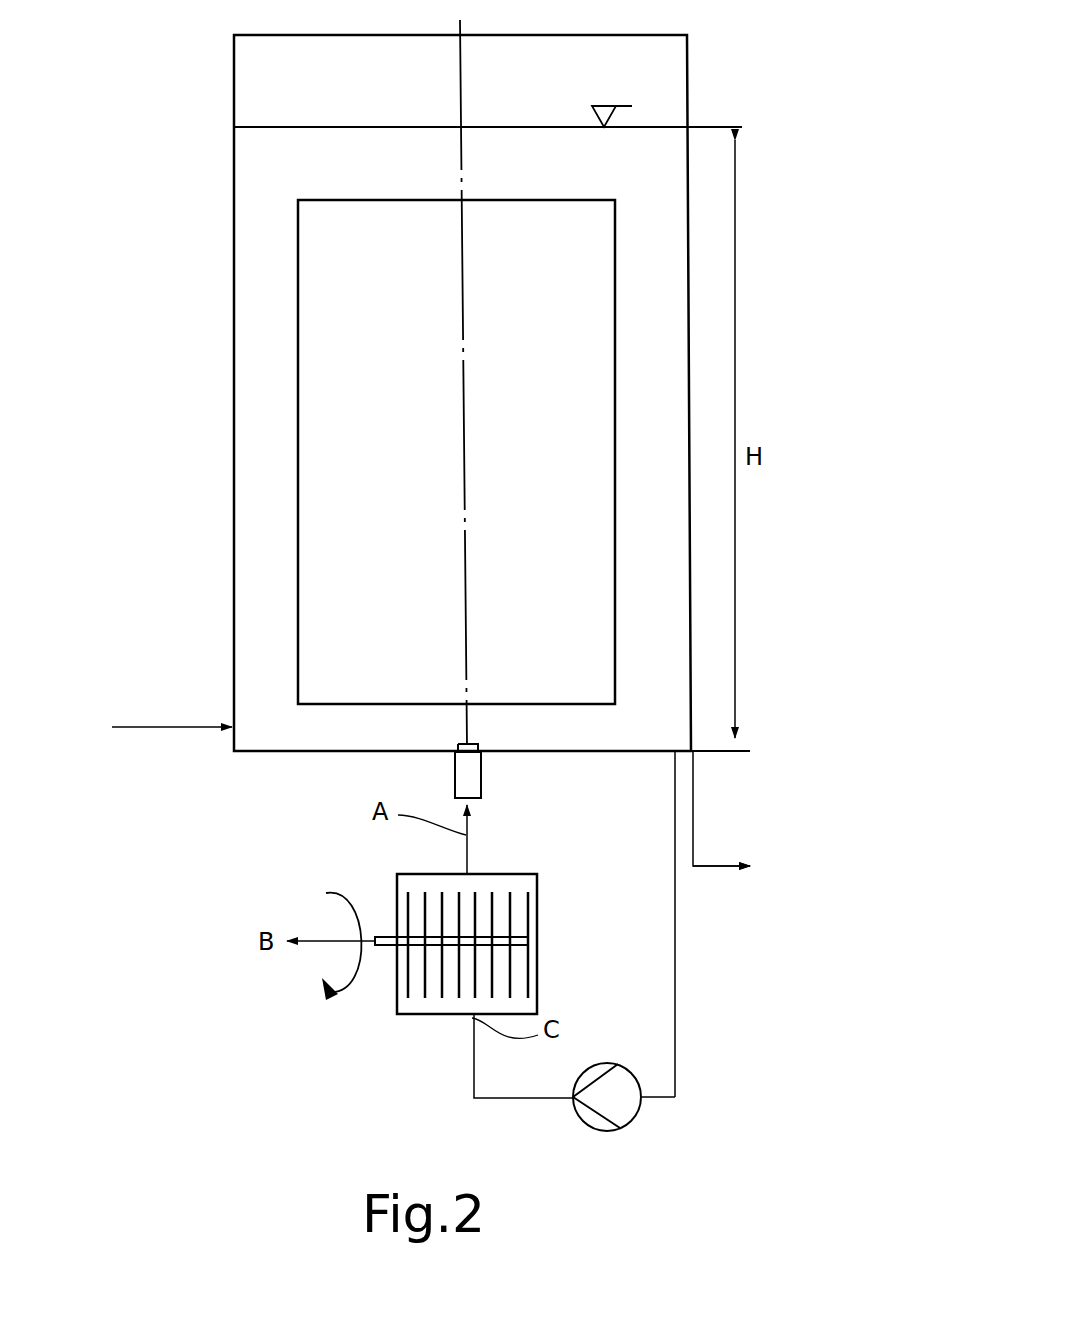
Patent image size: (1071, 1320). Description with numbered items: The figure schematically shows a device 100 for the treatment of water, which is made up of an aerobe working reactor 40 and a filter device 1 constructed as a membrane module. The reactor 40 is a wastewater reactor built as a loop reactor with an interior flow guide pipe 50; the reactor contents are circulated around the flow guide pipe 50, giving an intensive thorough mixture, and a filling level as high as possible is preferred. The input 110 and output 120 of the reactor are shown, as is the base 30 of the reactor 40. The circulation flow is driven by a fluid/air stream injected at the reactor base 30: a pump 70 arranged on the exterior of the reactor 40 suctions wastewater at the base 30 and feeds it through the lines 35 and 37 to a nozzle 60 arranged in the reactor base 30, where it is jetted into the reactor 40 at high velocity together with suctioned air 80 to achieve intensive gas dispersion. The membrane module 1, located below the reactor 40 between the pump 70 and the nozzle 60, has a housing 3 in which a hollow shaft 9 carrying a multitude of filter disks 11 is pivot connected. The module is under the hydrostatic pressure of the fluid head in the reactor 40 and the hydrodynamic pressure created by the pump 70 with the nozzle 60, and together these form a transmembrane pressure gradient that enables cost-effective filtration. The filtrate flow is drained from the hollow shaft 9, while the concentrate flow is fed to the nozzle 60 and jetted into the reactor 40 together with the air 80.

The device for the treatment of water 100 is at (96, 598).
The reactor 40 is at (688, 80).
The flow guide pipe 50 is at (296, 280).
The input 110 is at (172, 740).
The base 30 is at (273, 752).
The nozzle 60 is at (485, 770).
The air 80 is at (492, 800).
The filter device 1 is at (397, 1014).
The housing 3 is at (420, 1014).
The filter disks 11 is at (448, 998).
The hollow shaft 9 is at (528, 934).
The line 35 is at (676, 998).
The output 120 is at (722, 882).
The line 37 is at (510, 1099).
The pump 70 is at (637, 1115).